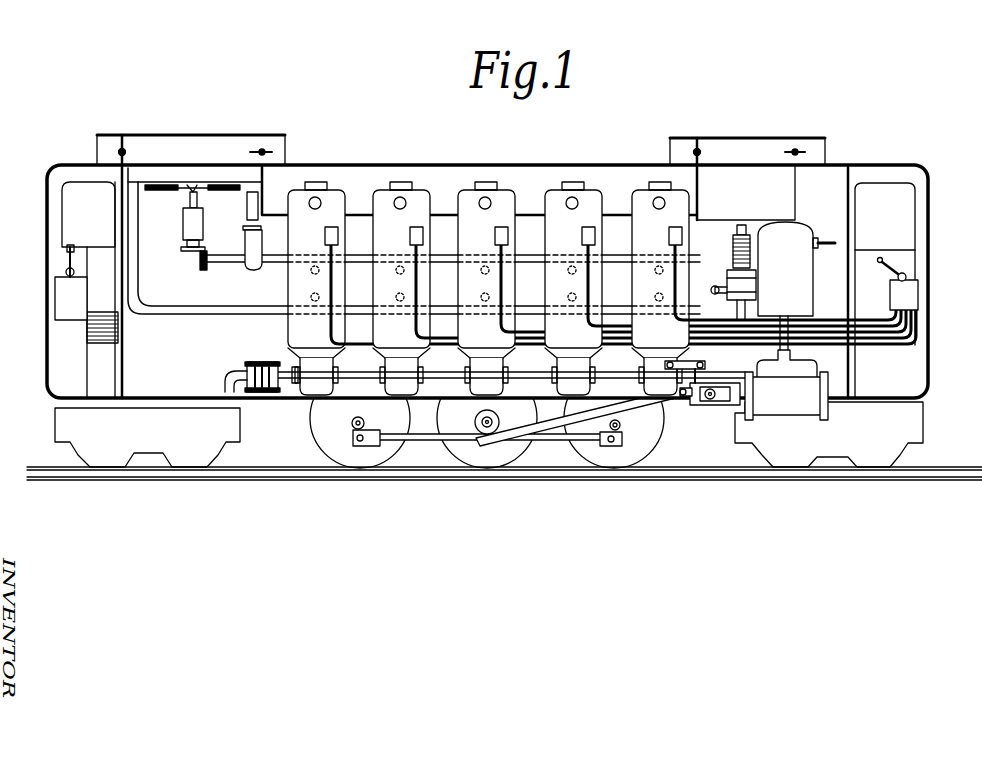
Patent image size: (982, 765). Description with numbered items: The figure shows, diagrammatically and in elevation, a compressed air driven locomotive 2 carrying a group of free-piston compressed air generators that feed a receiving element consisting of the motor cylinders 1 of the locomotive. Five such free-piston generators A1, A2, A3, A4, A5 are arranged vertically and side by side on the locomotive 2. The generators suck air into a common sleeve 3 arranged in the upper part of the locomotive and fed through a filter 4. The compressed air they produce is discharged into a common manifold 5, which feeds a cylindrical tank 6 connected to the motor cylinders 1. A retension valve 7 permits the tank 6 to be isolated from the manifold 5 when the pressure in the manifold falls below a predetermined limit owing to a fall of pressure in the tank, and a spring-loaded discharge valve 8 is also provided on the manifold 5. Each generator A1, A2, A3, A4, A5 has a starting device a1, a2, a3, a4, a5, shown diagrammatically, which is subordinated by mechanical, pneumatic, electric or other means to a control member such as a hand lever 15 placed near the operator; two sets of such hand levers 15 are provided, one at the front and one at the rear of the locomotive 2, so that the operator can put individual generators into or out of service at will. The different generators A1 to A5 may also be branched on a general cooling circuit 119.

The motor cylinders 1 is at (803, 422).
The locomotive 2 is at (926, 275).
The common sleeve 3 is at (534, 182).
The filter 4 is at (722, 177).
The common manifold 5 is at (433, 379).
The cylindrical tank 6 is at (792, 244).
The retension valve 7 is at (733, 276).
The discharge valve 8 is at (260, 362).
The hand lever 15 is at (66, 258).
The general cooling circuit 119 is at (278, 258).
The free-piston generator A1 is at (316, 288).
The free-piston generator A2 is at (401, 288).
The free-piston generator A3 is at (486, 288).
The free-piston generator A4 is at (573, 288).
The free-piston generator A5 is at (660, 288).
The starting device a1 is at (331, 227).
The starting device a2 is at (416, 227).
The starting device a3 is at (501, 227).
The starting device a4 is at (588, 227).
The starting device a5 is at (675, 227).